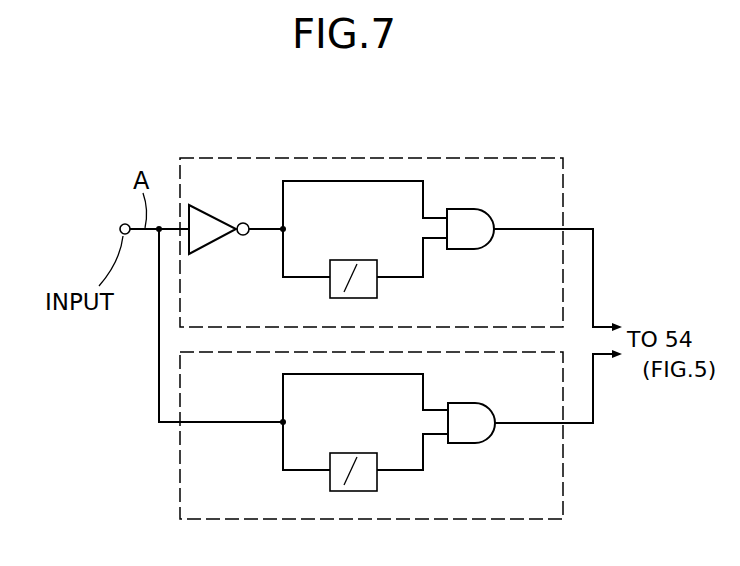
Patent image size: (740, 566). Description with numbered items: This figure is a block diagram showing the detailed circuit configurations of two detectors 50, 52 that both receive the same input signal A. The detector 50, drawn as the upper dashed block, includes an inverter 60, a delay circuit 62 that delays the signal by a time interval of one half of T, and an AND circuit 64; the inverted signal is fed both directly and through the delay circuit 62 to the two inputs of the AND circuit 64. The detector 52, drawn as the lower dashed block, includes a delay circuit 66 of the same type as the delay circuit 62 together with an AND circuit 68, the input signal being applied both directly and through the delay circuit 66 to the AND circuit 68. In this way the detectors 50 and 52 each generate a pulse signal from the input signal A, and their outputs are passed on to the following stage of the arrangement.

The detector 50 is at (534, 158).
The detector 52 is at (502, 520).
The inverter 60 is at (215, 243).
The delay circuit 62 is at (378, 288).
The AND circuit 64 is at (474, 249).
The delay circuit 66 is at (355, 452).
The AND circuit 68 is at (470, 443).